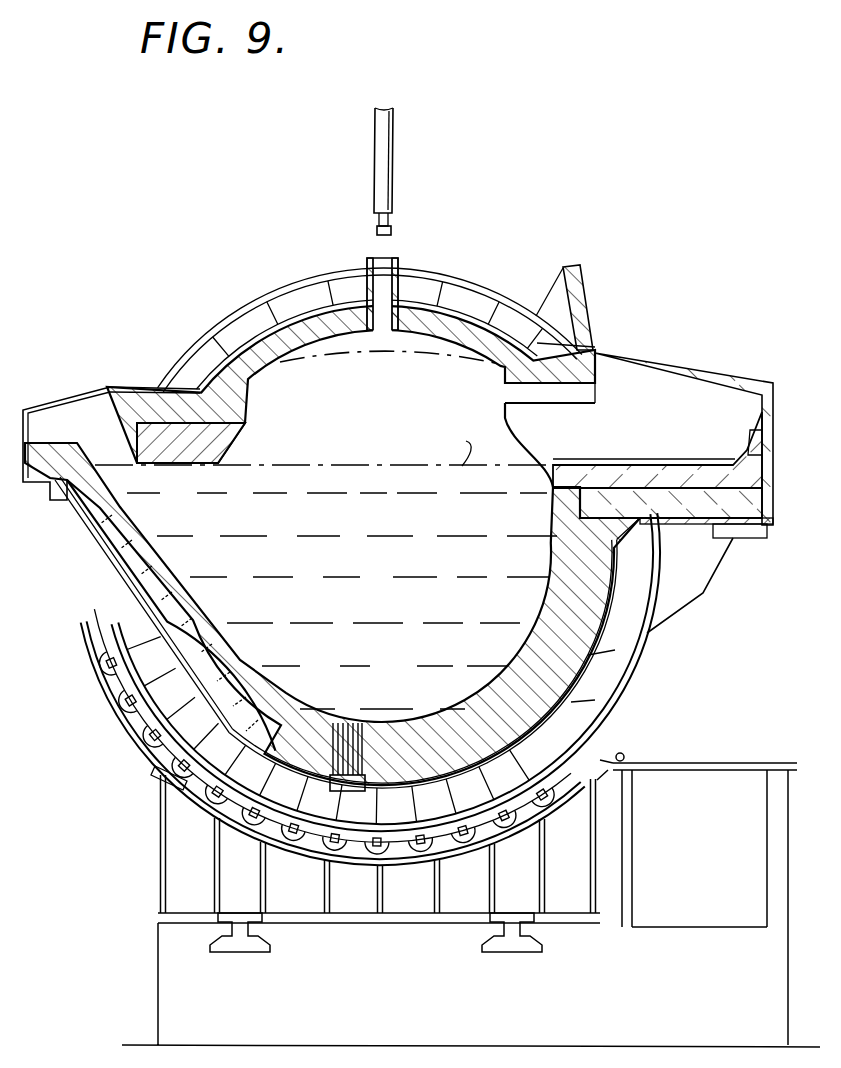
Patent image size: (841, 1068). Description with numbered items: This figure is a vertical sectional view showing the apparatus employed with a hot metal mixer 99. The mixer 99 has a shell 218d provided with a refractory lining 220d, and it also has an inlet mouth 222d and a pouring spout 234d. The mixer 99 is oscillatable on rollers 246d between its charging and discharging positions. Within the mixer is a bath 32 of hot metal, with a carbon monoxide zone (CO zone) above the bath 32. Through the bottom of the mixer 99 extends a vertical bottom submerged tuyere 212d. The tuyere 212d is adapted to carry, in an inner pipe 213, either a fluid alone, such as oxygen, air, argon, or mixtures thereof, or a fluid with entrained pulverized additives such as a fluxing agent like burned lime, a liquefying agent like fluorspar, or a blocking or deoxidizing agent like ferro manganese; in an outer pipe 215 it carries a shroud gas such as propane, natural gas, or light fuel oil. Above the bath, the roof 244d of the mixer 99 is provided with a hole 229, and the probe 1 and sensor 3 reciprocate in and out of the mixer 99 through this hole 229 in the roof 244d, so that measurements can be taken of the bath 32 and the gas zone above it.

The probe 1 is at (396, 151).
The sensor 3 is at (374, 231).
The hole 229 is at (396, 268).
The roof 244d is at (465, 330).
The hot metal mixer 99 is at (598, 314).
The inlet mouth 222d is at (693, 388).
The pouring spout 234d is at (127, 515).
The bath 32 is at (387, 521).
The refractory lining 220d is at (538, 620).
The shell 218d is at (633, 661).
The outer pipe 215 is at (334, 722).
The inner pipe 213 is at (350, 722).
The rollers 246d is at (148, 745).
The tuyere 212d is at (350, 796).